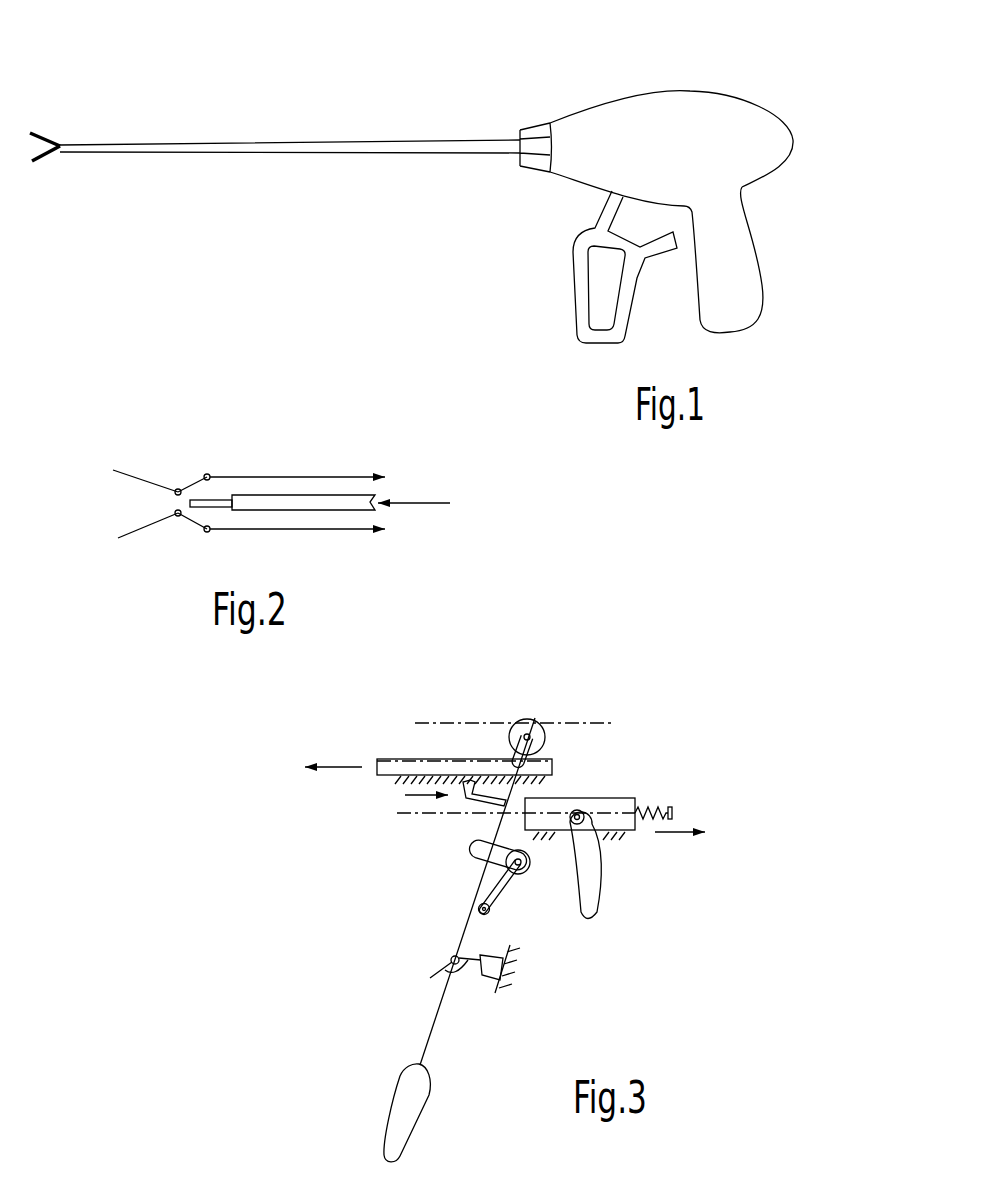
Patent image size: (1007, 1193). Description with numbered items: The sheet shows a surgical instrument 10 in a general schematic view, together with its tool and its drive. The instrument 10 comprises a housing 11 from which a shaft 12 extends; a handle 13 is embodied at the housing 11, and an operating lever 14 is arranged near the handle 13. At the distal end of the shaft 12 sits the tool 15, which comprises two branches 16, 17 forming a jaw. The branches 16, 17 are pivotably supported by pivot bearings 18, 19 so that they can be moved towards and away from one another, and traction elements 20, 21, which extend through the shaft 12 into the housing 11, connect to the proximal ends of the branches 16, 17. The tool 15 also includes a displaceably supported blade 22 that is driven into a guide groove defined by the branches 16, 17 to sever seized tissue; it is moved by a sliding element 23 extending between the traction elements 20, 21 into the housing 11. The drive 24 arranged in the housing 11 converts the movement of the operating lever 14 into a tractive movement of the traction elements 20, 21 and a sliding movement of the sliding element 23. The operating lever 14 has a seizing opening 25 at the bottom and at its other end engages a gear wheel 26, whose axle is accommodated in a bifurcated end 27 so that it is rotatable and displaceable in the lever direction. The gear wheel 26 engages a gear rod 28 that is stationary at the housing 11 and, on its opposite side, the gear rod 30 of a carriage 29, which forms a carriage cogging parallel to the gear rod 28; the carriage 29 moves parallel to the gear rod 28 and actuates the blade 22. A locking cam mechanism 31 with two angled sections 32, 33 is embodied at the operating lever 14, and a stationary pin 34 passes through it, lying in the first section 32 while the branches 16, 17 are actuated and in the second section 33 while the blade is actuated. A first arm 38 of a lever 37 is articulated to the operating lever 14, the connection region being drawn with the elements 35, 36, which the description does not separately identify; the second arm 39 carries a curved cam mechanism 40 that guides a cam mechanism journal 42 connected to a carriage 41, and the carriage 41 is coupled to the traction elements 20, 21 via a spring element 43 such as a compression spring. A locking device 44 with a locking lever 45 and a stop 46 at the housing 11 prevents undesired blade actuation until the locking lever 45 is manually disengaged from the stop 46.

In FIG. 1, the instrument 10 is at (510, 100).
In FIG. 1, the housing 11 is at (708, 122).
In FIG. 1, the shaft 12 is at (312, 143).
In FIG. 1, the handle 13 is at (748, 258).
In FIG. 1, the operating lever 14 is at (580, 268).
In FIG. 3, the operating lever 14 is at (432, 1004).
In FIG. 1, the tool 15 is at (100, 142).
In FIG. 2, the tool 15 is at (268, 375).
In FIG. 1, the branch 16 is at (33, 133).
In FIG. 2, the branch 16 is at (132, 475).
In FIG. 1, the branch 17 is at (33, 163).
In FIG. 2, the branch 17 is at (130, 535).
In FIG. 2, the pivot bearing 18 is at (178, 487).
In FIG. 2, the pivot bearing 19 is at (178, 519).
In FIG. 2, the traction element 20 is at (293, 475).
In FIG. 2, the traction element 21 is at (297, 532).
In FIG. 2, the blade 22 is at (218, 490).
In FIG. 2, the sliding element 23 is at (330, 500).
In FIG. 3, the drive 24 is at (562, 665).
In FIG. 3, the seizing opening 25 is at (405, 1118).
In FIG. 3, the gear wheel 26 is at (545, 735).
In FIG. 3, the bifurcated end 27 is at (517, 733).
In FIG. 3, the gear rod 28 is at (588, 723).
In FIG. 3, the carriage 29 is at (377, 767).
In FIG. 3, the gear rod 30 is at (420, 758).
In FIG. 3, the locking cam mechanism 31 is at (414, 795).
In FIG. 3, the first section 32 is at (467, 786).
In FIG. 3, the second section 33 is at (483, 797).
In FIG. 3, the pin 34 is at (505, 803).
In FIG. 3, the connecting link 35 is at (470, 856).
In FIG. 3, the pivot joint 36 is at (537, 867).
In FIG. 3, the lever 37 is at (564, 922).
In FIG. 3, the first arm 38 is at (497, 893).
In FIG. 3, the second arm 39 is at (566, 885).
In FIG. 3, the cam mechanism 40 is at (603, 872).
In FIG. 3, the carriage 41 is at (627, 797).
In FIG. 3, the cam mechanism journal 42 is at (597, 834).
In FIG. 3, the spring element 43 is at (655, 797).
In FIG. 3, the locking device 44 is at (440, 953).
In FIG. 3, the locking lever 45 is at (440, 972).
In FIG. 3, the stop 46 is at (480, 953).